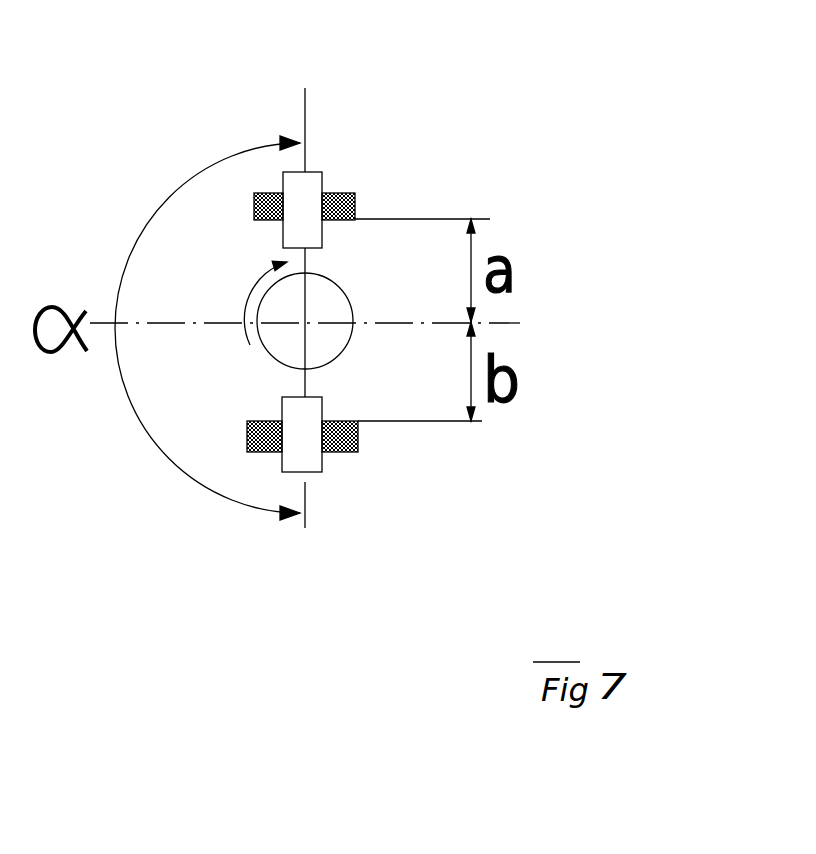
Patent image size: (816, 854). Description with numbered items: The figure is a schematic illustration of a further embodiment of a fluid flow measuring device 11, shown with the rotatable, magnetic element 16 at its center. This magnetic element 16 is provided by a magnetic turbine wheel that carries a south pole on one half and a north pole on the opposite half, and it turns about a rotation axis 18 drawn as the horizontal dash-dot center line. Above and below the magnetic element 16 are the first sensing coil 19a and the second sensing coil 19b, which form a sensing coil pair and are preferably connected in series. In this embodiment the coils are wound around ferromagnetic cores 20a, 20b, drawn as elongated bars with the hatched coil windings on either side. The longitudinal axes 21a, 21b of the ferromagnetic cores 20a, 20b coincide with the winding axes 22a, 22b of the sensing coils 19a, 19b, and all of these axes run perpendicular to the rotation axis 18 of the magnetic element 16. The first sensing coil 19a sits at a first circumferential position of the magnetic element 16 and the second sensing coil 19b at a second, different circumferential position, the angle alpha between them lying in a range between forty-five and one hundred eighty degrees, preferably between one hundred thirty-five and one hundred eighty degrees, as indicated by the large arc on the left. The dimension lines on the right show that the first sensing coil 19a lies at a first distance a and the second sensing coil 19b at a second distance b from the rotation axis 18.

The fluid flow measuring device 11 is at (504, 40).
The rotatable magnetic element 16 is at (247, 383).
The rotation axis 18 is at (314, 316).
The first sensing coil 19a is at (346, 183).
The second sensing coil 19b is at (368, 466).
The ferromagnetic core 20a is at (300, 226).
The ferromagnetic core 20b is at (297, 463).
The longitudinal axis of the ferromagnetic core 21a is at (223, 95).
The winding axis of the first sensing coil 22a is at (300, 120).
The longitudinal axis of the ferromagnetic core 21b is at (182, 629).
The winding axis of the second sensing coil 22b is at (302, 536).